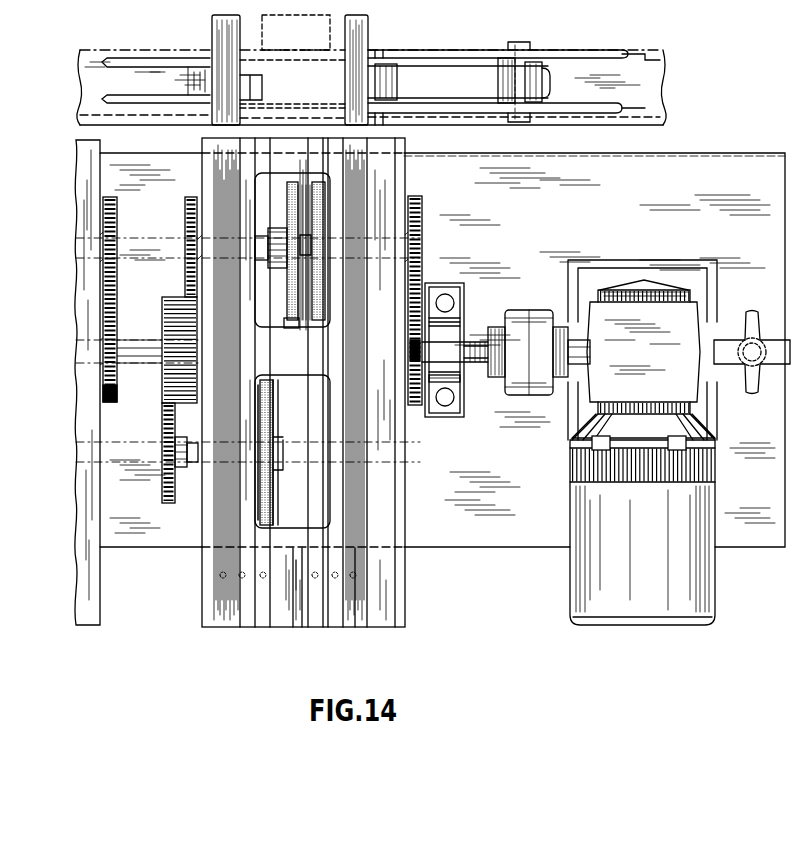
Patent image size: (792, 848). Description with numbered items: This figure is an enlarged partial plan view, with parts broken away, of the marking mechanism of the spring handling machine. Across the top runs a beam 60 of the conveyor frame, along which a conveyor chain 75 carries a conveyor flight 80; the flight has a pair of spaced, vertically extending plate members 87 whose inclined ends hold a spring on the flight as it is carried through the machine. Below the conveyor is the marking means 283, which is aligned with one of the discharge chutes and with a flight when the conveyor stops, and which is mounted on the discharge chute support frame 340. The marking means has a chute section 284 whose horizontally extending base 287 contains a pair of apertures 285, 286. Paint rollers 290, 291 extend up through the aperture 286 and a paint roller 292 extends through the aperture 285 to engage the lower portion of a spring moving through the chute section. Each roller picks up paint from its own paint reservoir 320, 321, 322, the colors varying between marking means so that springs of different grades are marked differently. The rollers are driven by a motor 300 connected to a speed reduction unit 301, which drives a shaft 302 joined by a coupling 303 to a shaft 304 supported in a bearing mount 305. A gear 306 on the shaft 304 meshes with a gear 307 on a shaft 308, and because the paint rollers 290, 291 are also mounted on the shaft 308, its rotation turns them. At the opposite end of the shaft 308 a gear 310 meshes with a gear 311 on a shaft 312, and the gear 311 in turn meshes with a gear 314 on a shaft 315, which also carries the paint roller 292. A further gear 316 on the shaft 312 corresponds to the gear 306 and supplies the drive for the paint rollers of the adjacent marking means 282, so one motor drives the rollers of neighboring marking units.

The beam 60 is at (660, 44).
The chain 75 is at (503, 81).
The conveyor flight 80 is at (380, 47).
The plate member 87 is at (210, 30).
The marking means 282 is at (125, 600).
The marking means 283 is at (411, 605).
The chute section 284 is at (361, 620).
The aperture 285 is at (322, 518).
The aperture 286 is at (260, 185).
The horizontally extending base 287 is at (296, 628).
The paint roller 290 is at (325, 199).
The paint roller 291 is at (290, 328).
The paint roller 292 is at (275, 510).
The motor 300 is at (710, 586).
The speed reduction unit 301 is at (695, 314).
The shaft 302 is at (575, 364).
The coupling 303 is at (540, 303).
The shaft 304 is at (470, 342).
The bearing mount 305 is at (460, 378).
The gear 306 is at (416, 406).
The gear 307 is at (422, 224).
The shaft 308 is at (396, 250).
The gear 310 is at (186, 219).
The gear 311 is at (173, 298).
The shaft 312 is at (152, 340).
The gear 314 is at (162, 498).
The shaft 315 is at (192, 470).
The gear 316 is at (130, 382).
The paint reservoir 320 is at (327, 180).
The paint reservoir 321 is at (278, 185).
The paint reservoir 322 is at (275, 422).
The discharge chute support frame 340 is at (756, 158).